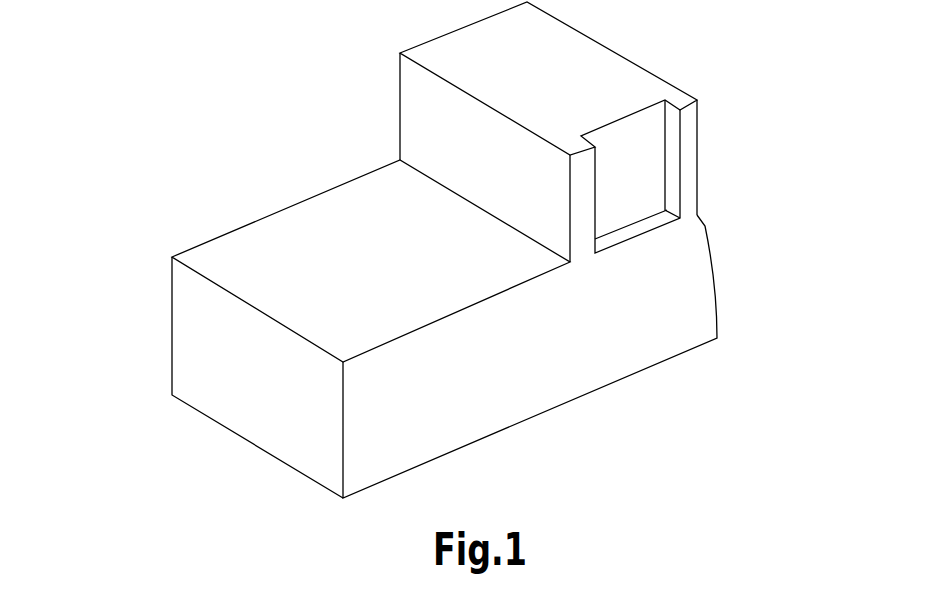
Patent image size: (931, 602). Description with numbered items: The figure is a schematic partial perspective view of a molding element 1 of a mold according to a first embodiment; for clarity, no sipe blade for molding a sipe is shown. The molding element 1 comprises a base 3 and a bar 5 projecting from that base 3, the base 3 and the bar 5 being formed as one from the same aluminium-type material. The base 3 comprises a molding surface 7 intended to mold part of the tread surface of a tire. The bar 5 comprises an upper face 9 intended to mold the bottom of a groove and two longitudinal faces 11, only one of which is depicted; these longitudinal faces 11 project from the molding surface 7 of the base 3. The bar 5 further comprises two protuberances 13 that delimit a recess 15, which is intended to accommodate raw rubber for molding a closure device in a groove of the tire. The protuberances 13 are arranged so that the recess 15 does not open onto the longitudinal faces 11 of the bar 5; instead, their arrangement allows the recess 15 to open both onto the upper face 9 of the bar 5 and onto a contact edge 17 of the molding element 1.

The molding element 1 is at (233, 136).
The base 3 is at (108, 262).
The bar 5 is at (733, 102).
The molding surface 7 is at (371, 276).
The upper face 9 is at (523, 74).
The longitudinal faces 11 is at (472, 172).
The protuberances 13 is at (572, 203).
The recess 15 is at (651, 190).
The contact edge 17 is at (586, 327).